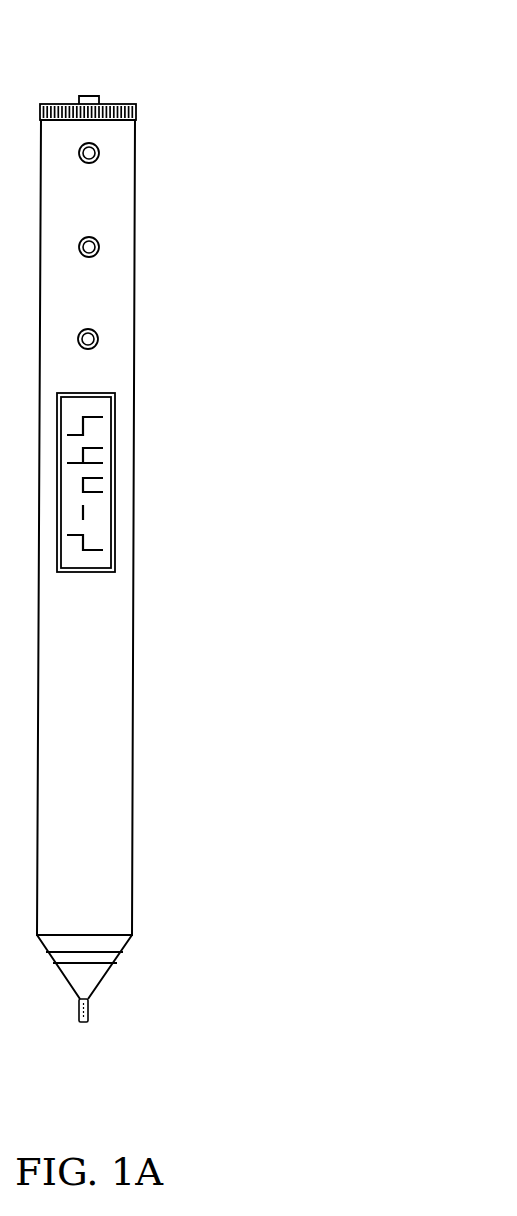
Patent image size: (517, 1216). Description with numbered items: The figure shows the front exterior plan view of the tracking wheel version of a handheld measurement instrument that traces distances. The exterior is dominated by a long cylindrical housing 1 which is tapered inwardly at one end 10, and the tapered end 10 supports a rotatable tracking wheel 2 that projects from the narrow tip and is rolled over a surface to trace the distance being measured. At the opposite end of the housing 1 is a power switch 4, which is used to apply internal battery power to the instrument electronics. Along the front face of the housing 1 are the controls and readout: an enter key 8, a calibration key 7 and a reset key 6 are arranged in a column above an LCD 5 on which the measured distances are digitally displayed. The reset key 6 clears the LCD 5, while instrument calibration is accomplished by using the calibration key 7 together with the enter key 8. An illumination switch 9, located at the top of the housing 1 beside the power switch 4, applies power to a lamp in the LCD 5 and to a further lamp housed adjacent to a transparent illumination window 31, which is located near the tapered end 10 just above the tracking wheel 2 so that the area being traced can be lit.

The cylindrical housing 1 is at (140, 832).
The rotatable tracking wheel 2 is at (100, 1032).
The power switch 4 is at (191, 57).
The LCD 5 is at (120, 458).
The reset key 6 is at (112, 339).
The calibration key 7 is at (112, 247).
The enter key 8 is at (110, 153).
The illumination switch 9 is at (143, 112).
The tapered end 10 is at (113, 991).
The transparent illumination window 31 is at (132, 958).